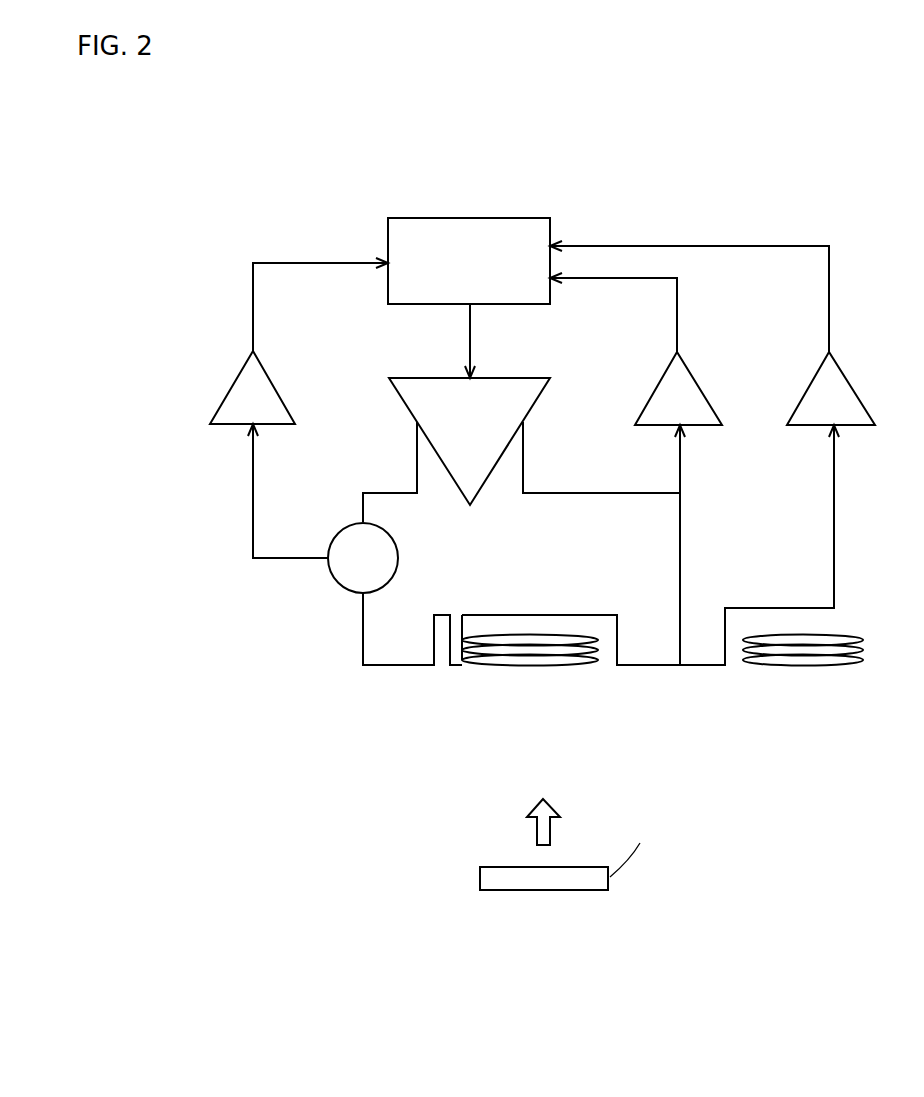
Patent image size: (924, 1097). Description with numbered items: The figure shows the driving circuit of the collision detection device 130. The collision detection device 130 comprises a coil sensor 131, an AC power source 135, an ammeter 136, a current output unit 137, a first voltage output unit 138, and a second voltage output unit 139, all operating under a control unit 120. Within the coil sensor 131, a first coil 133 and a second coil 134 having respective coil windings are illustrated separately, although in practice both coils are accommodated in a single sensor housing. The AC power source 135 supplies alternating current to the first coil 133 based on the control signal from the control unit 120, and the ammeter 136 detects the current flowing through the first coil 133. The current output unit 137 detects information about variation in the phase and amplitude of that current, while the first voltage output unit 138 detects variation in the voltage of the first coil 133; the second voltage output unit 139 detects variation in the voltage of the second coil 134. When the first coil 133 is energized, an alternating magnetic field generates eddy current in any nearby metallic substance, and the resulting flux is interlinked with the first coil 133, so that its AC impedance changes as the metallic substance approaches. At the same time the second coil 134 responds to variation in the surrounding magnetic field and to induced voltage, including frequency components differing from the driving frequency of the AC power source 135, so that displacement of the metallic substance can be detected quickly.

The control unit 120 is at (497, 216).
The collision detection device 130 is at (744, 198).
The coil sensor 131 is at (443, 790).
The first coil 133 is at (545, 672).
The second coil 134 is at (785, 672).
The AC power source 135 is at (400, 395).
The ammeter 136 is at (340, 590).
The current output unit 137 is at (222, 430).
The first voltage output unit 138 is at (700, 430).
The second voltage output unit 139 is at (865, 430).